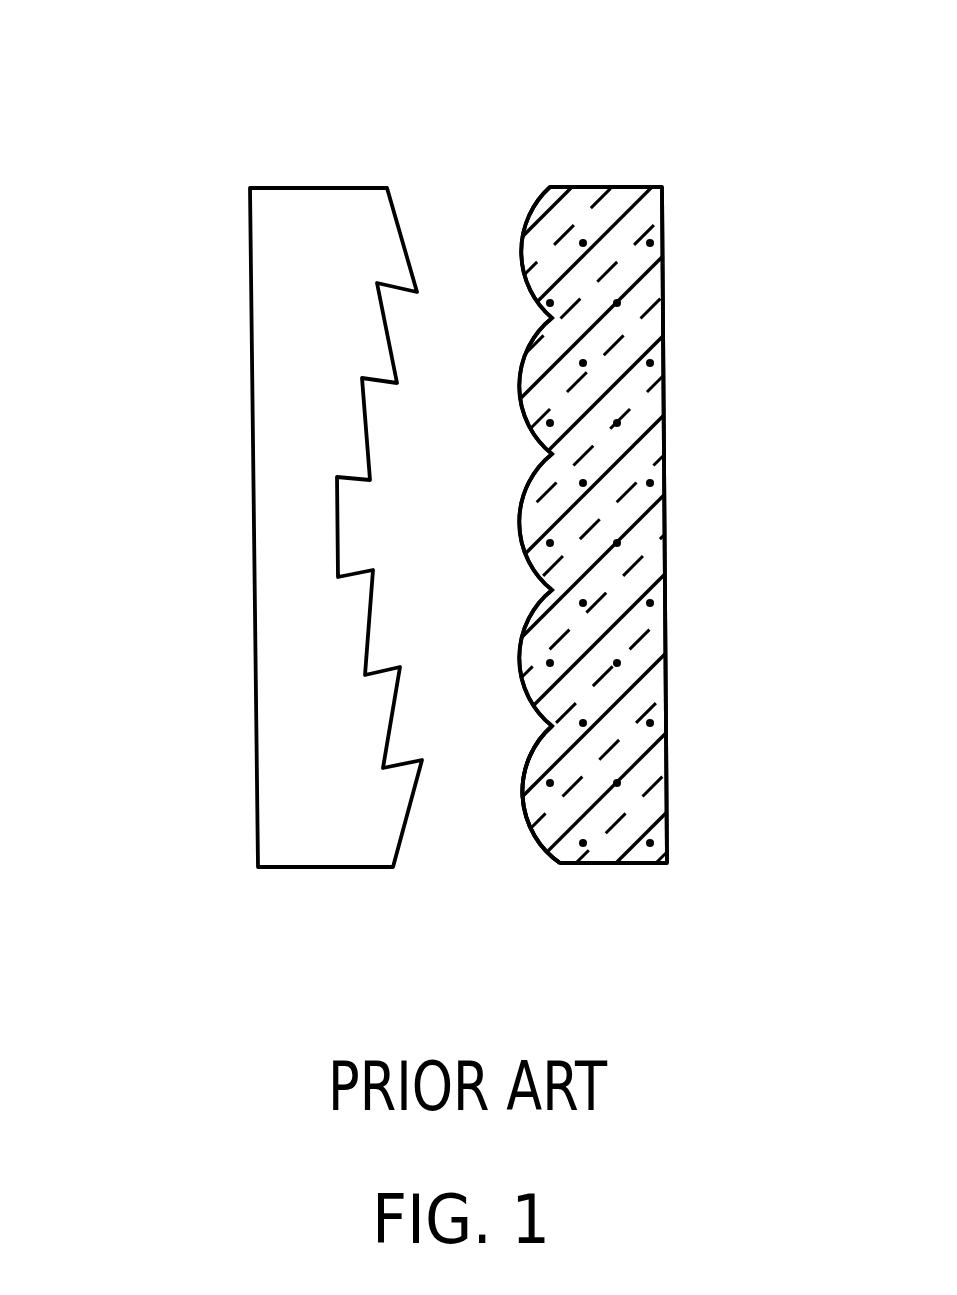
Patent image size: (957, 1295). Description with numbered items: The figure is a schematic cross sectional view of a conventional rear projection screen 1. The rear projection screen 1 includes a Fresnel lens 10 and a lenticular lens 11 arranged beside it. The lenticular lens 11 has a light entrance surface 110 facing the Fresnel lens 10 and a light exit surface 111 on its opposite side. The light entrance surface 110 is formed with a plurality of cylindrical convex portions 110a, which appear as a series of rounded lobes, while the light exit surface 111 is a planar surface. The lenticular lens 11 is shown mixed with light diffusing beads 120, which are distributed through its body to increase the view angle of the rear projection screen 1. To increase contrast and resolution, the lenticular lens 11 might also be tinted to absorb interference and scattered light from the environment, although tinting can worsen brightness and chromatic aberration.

The rear projection screen 1 is at (100, 108).
The Fresnel lens 10 is at (288, 188).
The lenticular lens 11 is at (478, 489).
The light entrance surface 110 is at (533, 204).
The cylindrical convex portions 110a is at (550, 847).
The light exit surface 111 is at (663, 302).
The light diffusing beads 120 is at (622, 662).